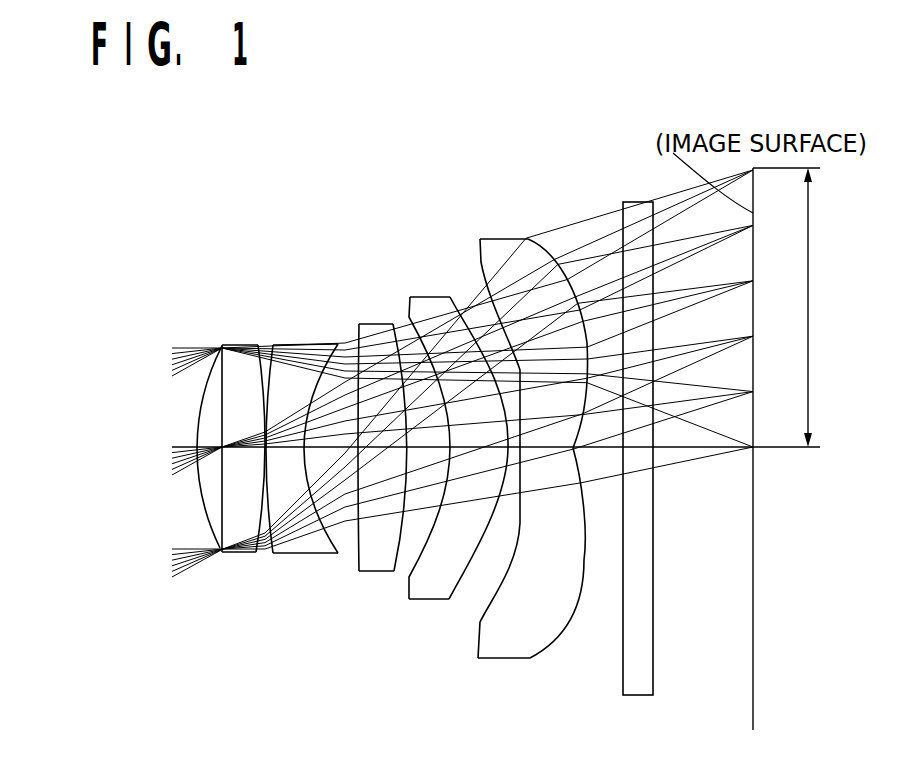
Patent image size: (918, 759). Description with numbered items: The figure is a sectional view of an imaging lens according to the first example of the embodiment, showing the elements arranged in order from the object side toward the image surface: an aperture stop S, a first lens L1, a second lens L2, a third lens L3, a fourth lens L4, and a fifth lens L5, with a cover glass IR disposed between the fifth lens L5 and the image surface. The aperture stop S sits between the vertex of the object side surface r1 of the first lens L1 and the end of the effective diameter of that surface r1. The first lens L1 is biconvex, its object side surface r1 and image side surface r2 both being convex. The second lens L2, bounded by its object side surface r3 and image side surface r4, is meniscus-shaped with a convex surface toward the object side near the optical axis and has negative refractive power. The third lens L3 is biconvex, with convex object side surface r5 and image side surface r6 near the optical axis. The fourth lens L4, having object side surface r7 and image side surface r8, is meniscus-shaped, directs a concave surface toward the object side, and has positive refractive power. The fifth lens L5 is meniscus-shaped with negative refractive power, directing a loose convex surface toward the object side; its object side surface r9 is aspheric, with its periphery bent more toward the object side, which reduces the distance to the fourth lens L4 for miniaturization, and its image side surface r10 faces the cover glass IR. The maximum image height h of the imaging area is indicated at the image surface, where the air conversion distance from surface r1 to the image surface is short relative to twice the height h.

The first lens L1 is at (223, 396).
The second lens L2 is at (298, 382).
The third lens L3 is at (367, 379).
The fourth lens L4 is at (450, 384).
The fifth lens L5 is at (525, 398).
The object side surface of the first lens r1 is at (222, 344).
The image side surface of the first lens r2 is at (258, 345).
The object side surface of the second lens r3 is at (275, 345).
The image side surface of the second lens r4 is at (337, 344).
The object side surface of the third lens r5 is at (358, 335).
The image side surface of the third lens r6 is at (397, 330).
The object side surface of the fourth lens r7 is at (410, 298).
The image side surface of the fourth lens r8 is at (460, 317).
The object side surface of the fifth lens r9 is at (485, 288).
The image side surface of the fifth lens r10 is at (546, 251).
The aperture stop S is at (203, 416).
The cover glass IR is at (625, 202).
The maximum image height h is at (819, 307).